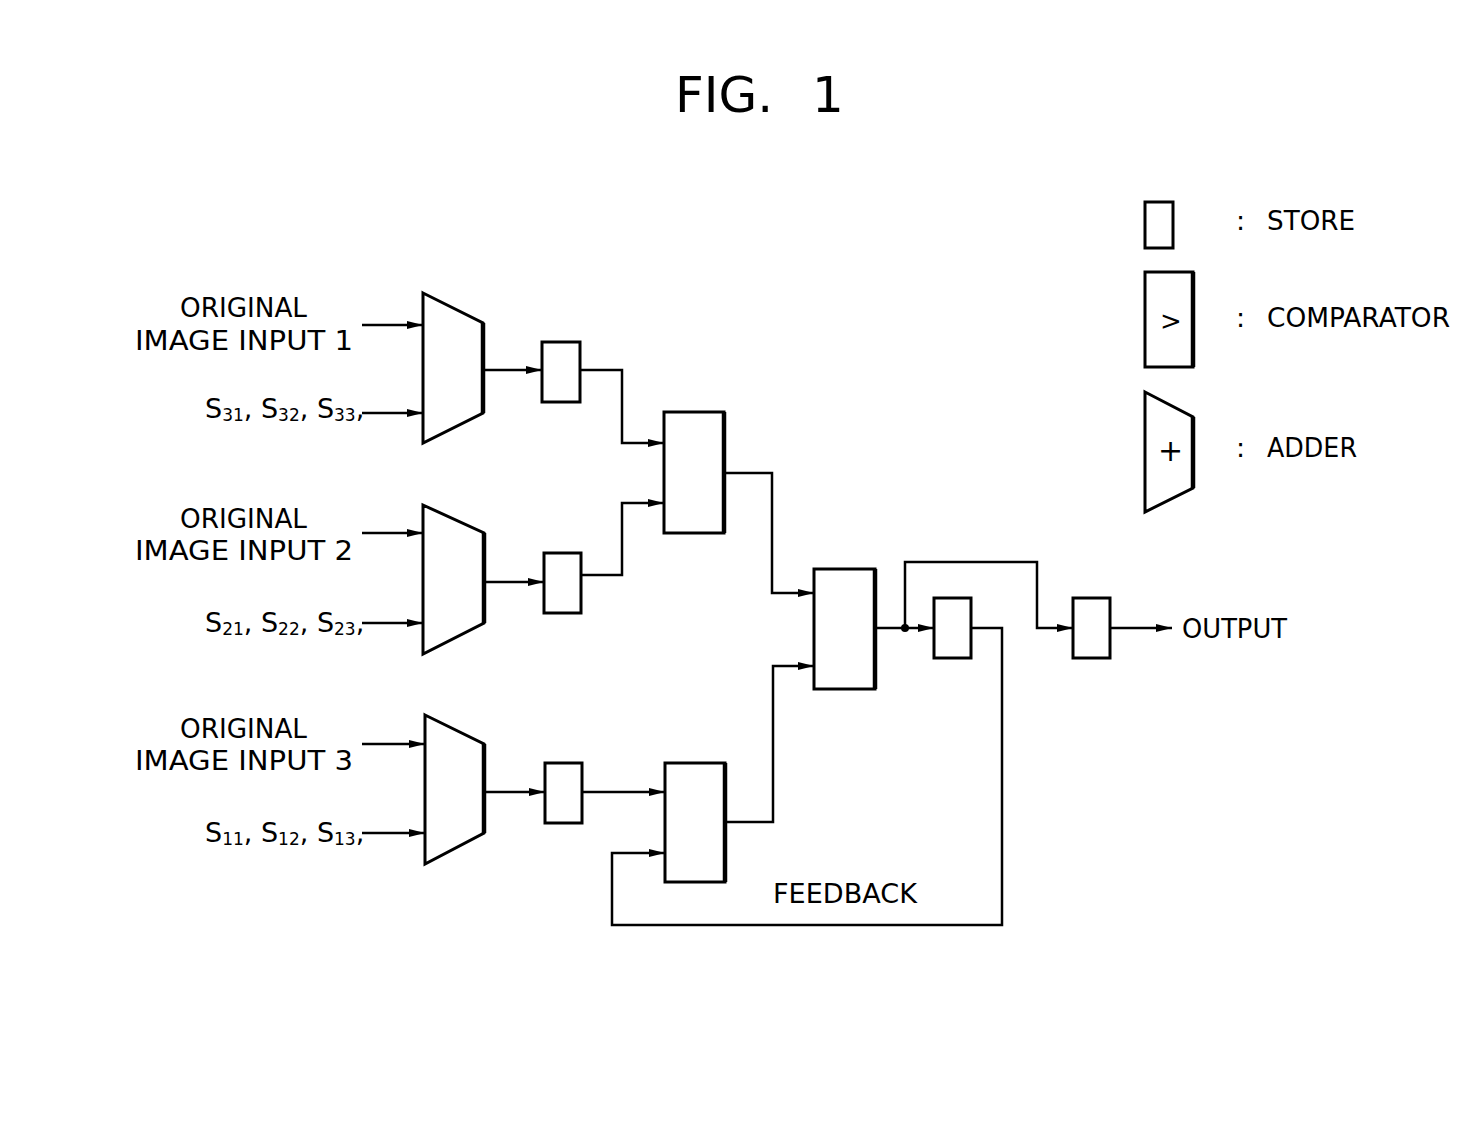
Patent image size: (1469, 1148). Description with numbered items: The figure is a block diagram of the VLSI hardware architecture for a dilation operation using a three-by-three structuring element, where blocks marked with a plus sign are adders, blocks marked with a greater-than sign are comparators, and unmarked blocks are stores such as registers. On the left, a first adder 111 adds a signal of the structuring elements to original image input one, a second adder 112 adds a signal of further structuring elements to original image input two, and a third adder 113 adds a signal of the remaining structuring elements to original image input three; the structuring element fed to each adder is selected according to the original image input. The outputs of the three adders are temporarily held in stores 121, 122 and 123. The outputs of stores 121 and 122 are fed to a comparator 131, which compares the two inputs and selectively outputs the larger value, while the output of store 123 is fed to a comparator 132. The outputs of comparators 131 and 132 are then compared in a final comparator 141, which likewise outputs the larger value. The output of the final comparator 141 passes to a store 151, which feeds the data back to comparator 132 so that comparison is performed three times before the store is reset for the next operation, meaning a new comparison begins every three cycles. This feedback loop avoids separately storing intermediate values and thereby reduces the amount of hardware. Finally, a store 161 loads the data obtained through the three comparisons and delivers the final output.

The first adder 111 is at (460, 308).
The second adder 112 is at (462, 522).
The third adder 113 is at (461, 730).
The store 121 is at (563, 342).
The store 122 is at (563, 553).
The store 123 is at (563, 763).
The comparator 131 is at (724, 447).
The comparator 132 is at (695, 763).
The final comparator 141 is at (843, 689).
The store 151 is at (952, 658).
The store 161 is at (1092, 658).